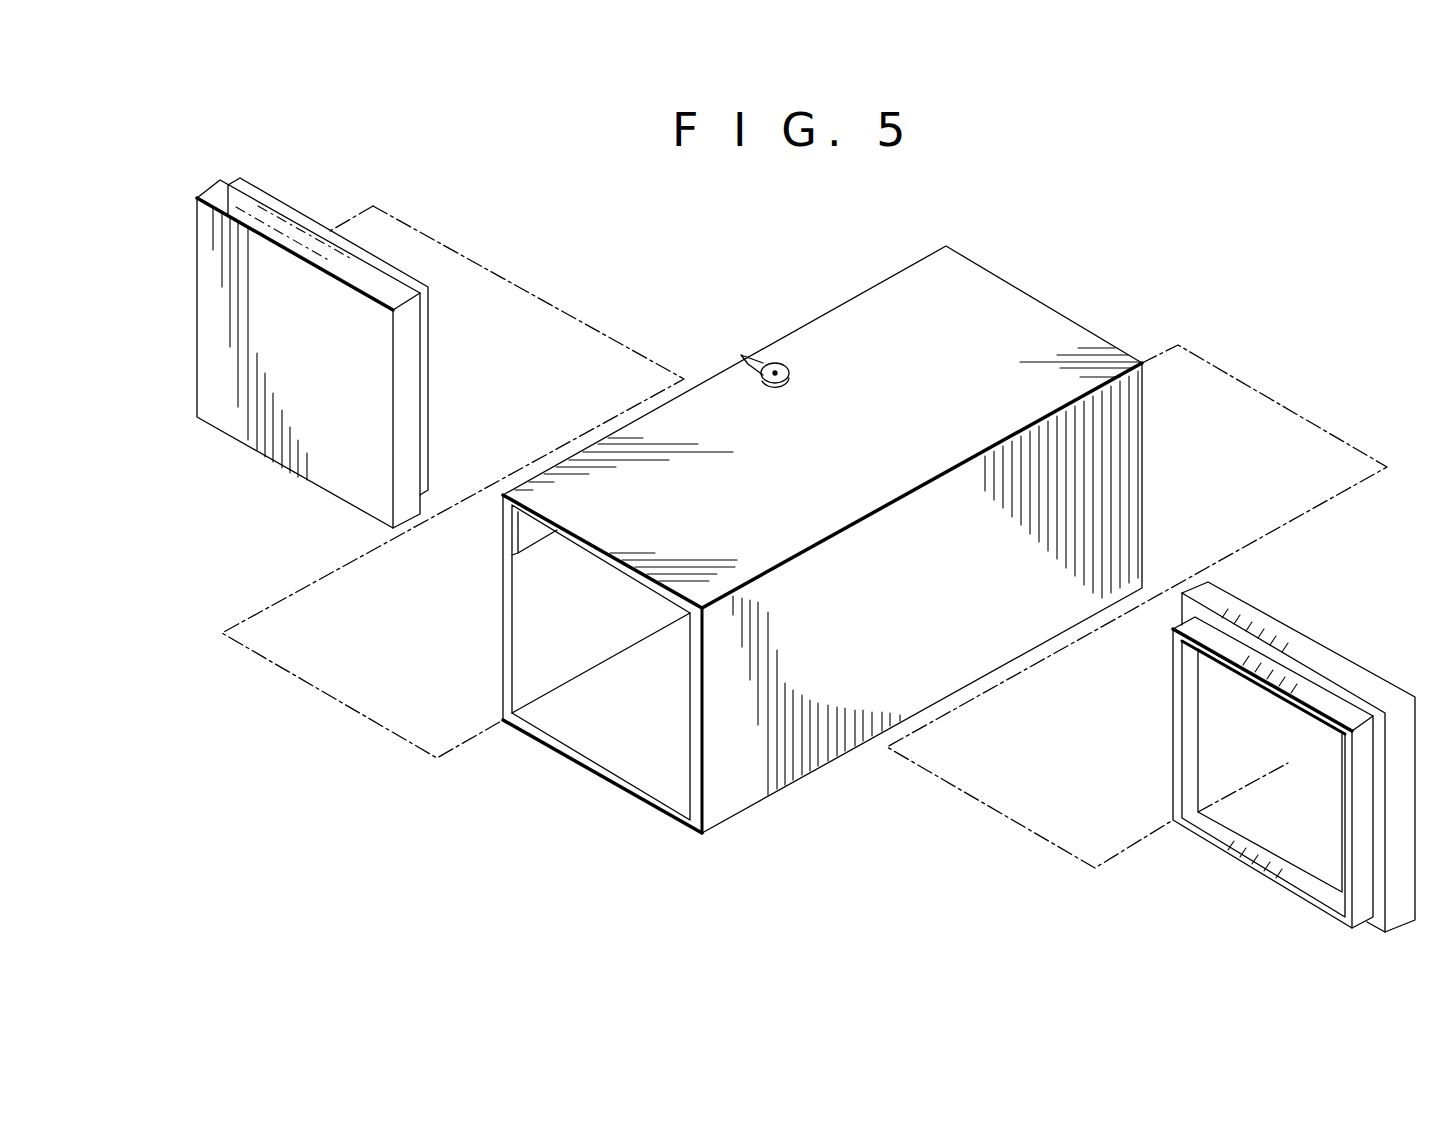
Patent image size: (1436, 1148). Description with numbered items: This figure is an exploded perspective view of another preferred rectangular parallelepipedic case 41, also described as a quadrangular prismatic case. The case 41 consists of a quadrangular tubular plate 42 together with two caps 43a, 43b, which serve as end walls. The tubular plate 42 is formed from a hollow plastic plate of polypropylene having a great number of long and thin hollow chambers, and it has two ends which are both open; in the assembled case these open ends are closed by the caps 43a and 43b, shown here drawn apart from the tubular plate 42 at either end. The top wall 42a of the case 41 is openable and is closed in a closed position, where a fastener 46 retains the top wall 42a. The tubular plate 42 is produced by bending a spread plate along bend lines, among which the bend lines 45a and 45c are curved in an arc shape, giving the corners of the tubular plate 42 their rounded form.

The rectangular parallelepipedic case 41 is at (1066, 313).
The quadrangular tubular plate 42 is at (808, 338).
The top wall 42a is at (824, 459).
The cap 43a is at (308, 242).
The cap 43b is at (1317, 653).
The bend line 45a is at (917, 487).
The bend line 45c is at (593, 672).
The fastener 46 is at (795, 367).